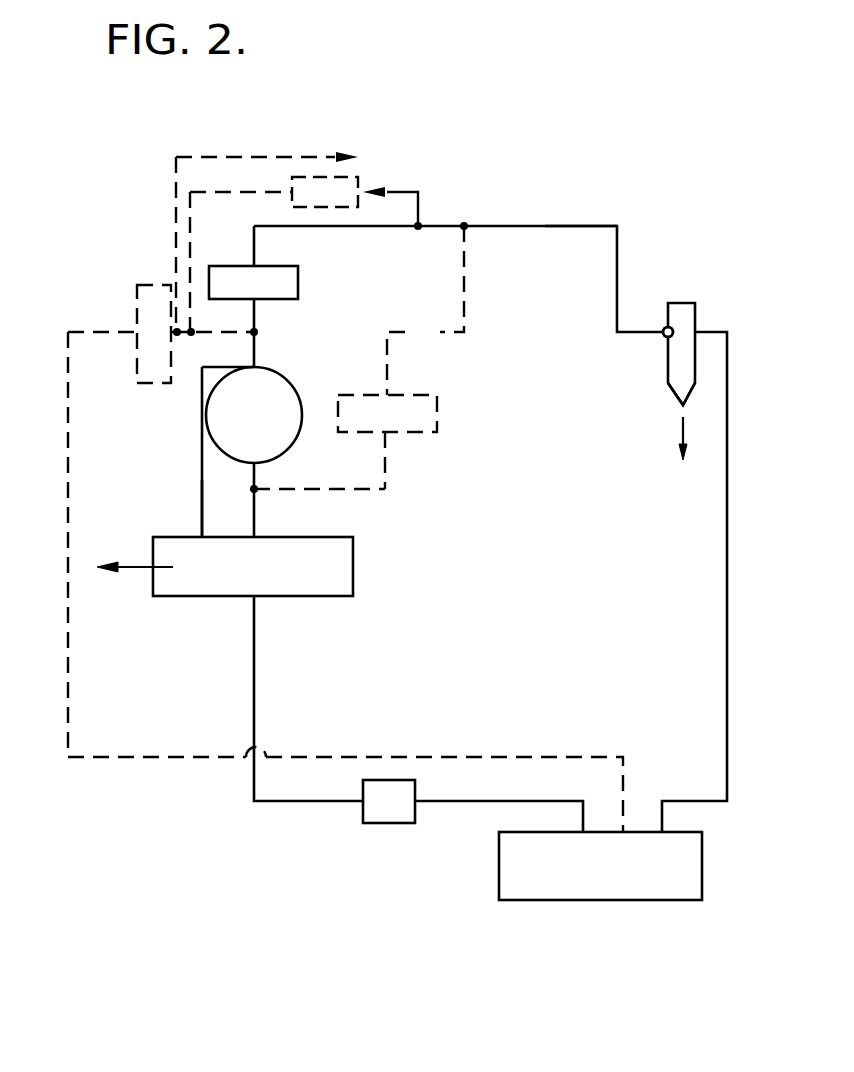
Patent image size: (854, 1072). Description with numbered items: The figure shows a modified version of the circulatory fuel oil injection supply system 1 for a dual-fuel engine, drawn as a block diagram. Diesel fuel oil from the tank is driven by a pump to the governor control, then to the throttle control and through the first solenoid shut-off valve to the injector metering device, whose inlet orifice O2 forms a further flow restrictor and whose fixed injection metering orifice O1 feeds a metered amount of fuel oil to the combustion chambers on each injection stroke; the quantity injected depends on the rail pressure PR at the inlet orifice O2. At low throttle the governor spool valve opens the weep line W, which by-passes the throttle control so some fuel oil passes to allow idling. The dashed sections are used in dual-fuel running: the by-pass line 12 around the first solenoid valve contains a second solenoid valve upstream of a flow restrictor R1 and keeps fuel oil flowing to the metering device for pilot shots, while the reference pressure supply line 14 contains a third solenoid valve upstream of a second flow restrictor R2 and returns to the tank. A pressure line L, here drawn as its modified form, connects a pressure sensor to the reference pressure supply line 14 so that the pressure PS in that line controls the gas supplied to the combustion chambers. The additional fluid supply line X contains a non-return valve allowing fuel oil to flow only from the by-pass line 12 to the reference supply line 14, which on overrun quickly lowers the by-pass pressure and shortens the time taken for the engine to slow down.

The circulatory fuel oil injection supply system 1 is at (240, 815).
The by-pass line 12 is at (385, 474).
The reference pressure supply line 14 is at (329, 558).
The pressure in the reference pressure supply line PS is at (263, 157).
The rail pressure PR is at (541, 226).
The pressure line L is at (176, 223).
The fluid supply line X is at (262, 192).
The flow restrictor R1 is at (425, 310).
The second flow restrictor R2 is at (62, 496).
The weep line W is at (202, 514).
The fixed injection metering orifice O1 is at (681, 405).
The inlet orifice O2 is at (664, 328).